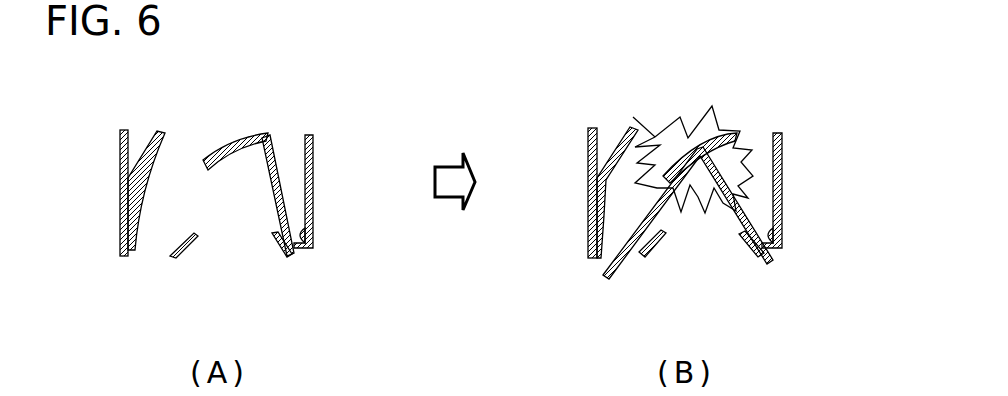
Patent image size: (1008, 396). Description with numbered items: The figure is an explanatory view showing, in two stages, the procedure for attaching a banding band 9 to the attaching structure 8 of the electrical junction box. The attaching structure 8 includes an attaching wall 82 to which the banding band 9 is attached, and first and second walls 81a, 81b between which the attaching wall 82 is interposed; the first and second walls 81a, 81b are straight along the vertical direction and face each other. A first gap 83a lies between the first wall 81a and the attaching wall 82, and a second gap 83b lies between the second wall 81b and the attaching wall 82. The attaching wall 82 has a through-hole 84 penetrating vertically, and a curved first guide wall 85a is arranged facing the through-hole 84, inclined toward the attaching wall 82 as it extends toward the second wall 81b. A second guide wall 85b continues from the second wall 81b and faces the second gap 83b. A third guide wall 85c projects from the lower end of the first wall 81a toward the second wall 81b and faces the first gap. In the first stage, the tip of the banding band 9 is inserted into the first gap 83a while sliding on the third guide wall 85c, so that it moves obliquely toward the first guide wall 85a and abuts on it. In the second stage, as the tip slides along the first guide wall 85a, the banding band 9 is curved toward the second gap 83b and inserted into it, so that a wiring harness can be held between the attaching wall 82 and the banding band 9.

The attaching structure 8 is at (326, 108).
The banding band 9 is at (271, 162).
The first wall 81a is at (313, 183).
The second wall 81b is at (121, 237).
The attaching wall 82 is at (180, 260).
The first gap 83a is at (302, 261).
The second gap 83b is at (142, 262).
The through-hole 84 is at (227, 242).
The first guide wall 85a is at (232, 148).
The second guide wall 85b is at (143, 148).
The third guide wall 85c is at (306, 236).